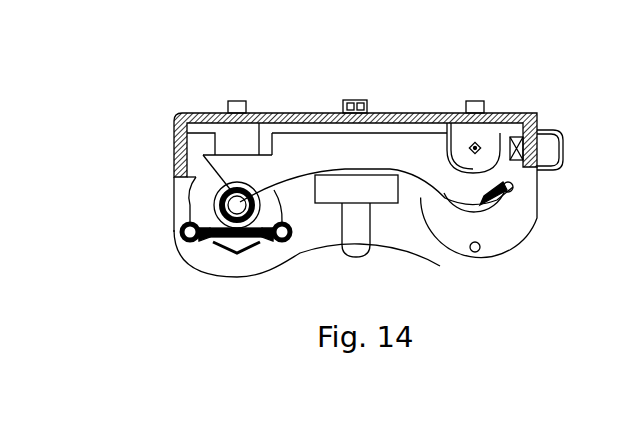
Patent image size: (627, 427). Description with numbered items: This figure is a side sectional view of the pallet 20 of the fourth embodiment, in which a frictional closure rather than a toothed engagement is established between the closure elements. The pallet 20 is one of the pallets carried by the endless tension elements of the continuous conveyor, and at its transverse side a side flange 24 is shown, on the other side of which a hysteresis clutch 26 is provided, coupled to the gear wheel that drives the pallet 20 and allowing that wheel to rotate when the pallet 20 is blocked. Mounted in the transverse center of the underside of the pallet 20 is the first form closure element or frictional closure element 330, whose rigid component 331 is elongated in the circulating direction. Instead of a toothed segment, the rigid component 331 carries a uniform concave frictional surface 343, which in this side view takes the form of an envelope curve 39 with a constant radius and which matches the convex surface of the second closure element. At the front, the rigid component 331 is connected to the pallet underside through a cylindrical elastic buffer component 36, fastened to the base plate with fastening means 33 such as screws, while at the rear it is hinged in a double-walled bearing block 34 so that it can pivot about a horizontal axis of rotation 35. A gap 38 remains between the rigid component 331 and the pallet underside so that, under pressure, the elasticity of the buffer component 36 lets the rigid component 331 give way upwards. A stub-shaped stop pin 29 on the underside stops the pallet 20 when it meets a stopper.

The pallet 20 is at (168, 138).
The side flange 24 is at (500, 245).
The hysteresis clutch 26 is at (190, 204).
The stop pin 29 is at (358, 220).
The fastening means 33 is at (240, 137).
The double-walled bearing block 34 is at (537, 124).
The horizontal axis of rotation 35 is at (478, 143).
The elastic buffer component 36 is at (215, 110).
The gap 38 is at (300, 150).
The envelope curve 39 is at (356, 189).
The first form closure element or frictional closure element 330 is at (413, 148).
The rigid component 331 is at (290, 115).
The concave frictional surface 343 is at (427, 262).